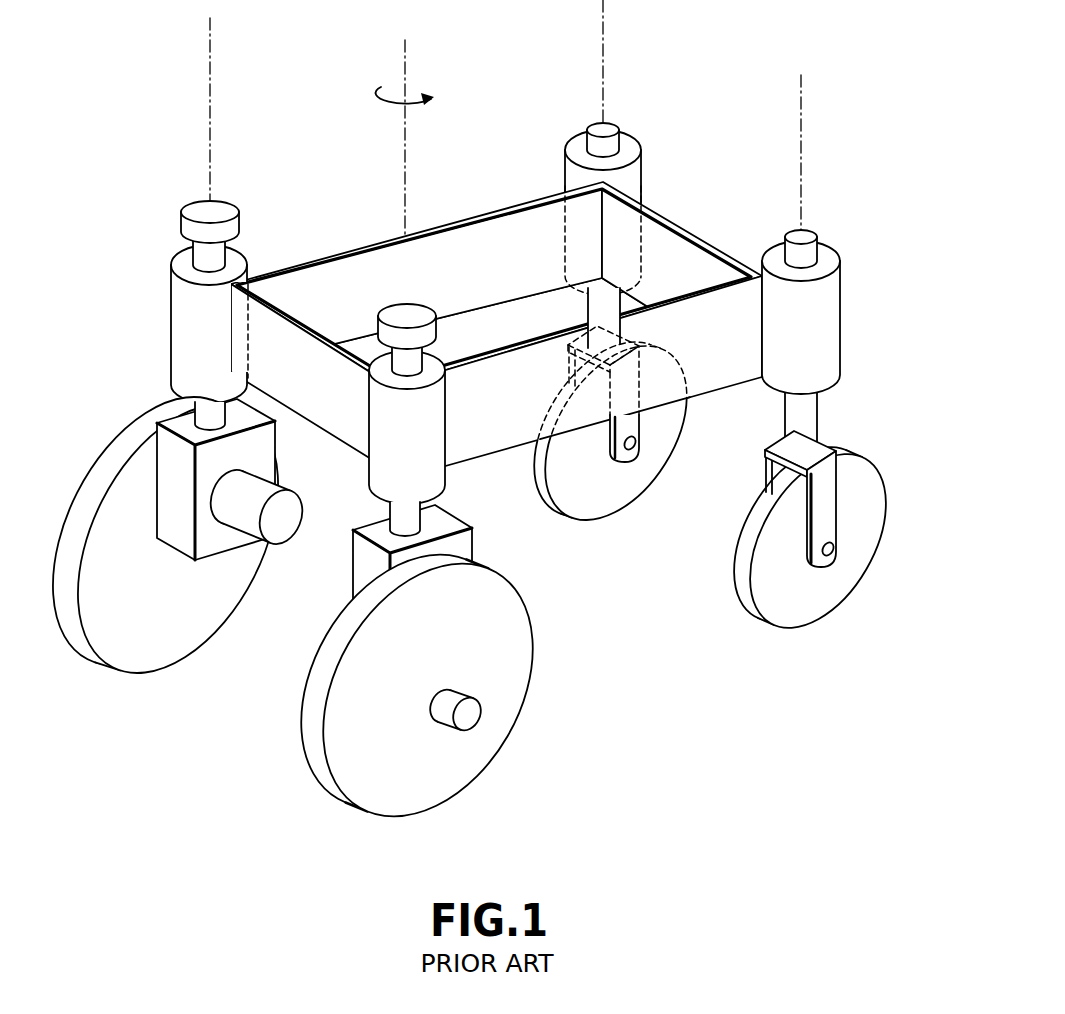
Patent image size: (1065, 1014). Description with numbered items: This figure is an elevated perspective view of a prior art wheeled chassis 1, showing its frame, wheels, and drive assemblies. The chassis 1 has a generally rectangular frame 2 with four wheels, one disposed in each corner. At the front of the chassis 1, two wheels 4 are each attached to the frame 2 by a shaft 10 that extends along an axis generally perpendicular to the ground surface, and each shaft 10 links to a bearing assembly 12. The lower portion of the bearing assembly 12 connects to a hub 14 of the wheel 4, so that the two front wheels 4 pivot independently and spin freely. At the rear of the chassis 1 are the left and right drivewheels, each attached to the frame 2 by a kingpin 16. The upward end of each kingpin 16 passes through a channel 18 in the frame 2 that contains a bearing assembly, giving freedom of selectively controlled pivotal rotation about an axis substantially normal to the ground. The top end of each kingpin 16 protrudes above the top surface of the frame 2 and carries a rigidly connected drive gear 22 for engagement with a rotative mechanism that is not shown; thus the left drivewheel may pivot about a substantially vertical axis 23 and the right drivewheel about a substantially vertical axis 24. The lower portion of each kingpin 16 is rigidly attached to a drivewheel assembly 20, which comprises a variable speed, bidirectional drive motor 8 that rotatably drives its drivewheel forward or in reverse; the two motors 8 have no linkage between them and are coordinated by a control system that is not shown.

The chassis 1 is at (706, 58).
The frame 2 is at (433, 228).
The wheel 4 is at (618, 500).
The drive motor 8 is at (272, 527).
The shaft 10 is at (797, 420).
The bearing assembly 12 is at (830, 452).
The hub 14 is at (833, 548).
The kingpin 16 is at (212, 410).
The channel 18 is at (190, 313).
The drivewheel assembly 20 is at (187, 425).
The drive gear 22 is at (222, 211).
The vertical axis 23 is at (211, 60).
The vertical axis 24 is at (402, 56).